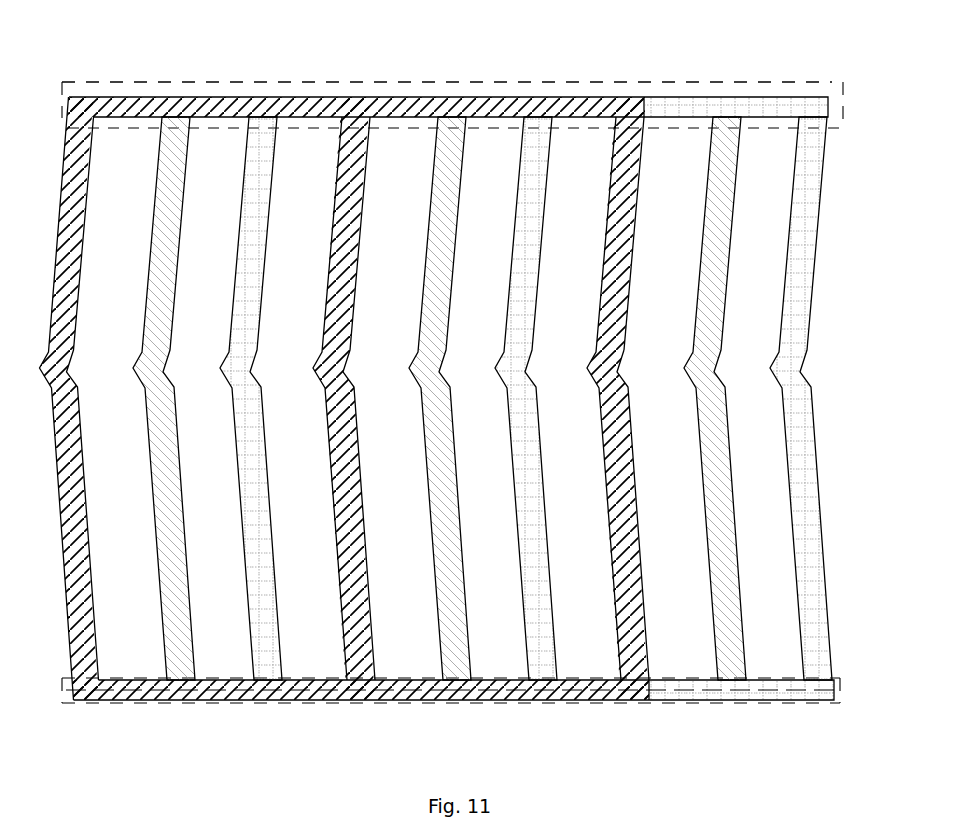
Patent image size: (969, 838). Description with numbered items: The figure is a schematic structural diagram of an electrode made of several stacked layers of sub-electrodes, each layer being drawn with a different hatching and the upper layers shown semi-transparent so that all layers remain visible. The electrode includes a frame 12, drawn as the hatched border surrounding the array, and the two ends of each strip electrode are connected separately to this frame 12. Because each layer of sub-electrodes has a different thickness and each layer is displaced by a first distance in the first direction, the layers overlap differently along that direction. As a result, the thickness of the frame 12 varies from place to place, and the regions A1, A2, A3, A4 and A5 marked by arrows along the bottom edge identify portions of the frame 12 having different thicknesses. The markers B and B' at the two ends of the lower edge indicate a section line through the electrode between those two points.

The frame 12 is at (447, 41).
The region of the frame A1 is at (152, 433).
The region of the frame A2 is at (244, 433).
The region of the frame A3 is at (466, 433).
The region of the frame A4 is at (725, 433).
The region of the frame A5 is at (815, 433).
The section line B end B is at (240, 646).
The section line B' end B' is at (669, 646).